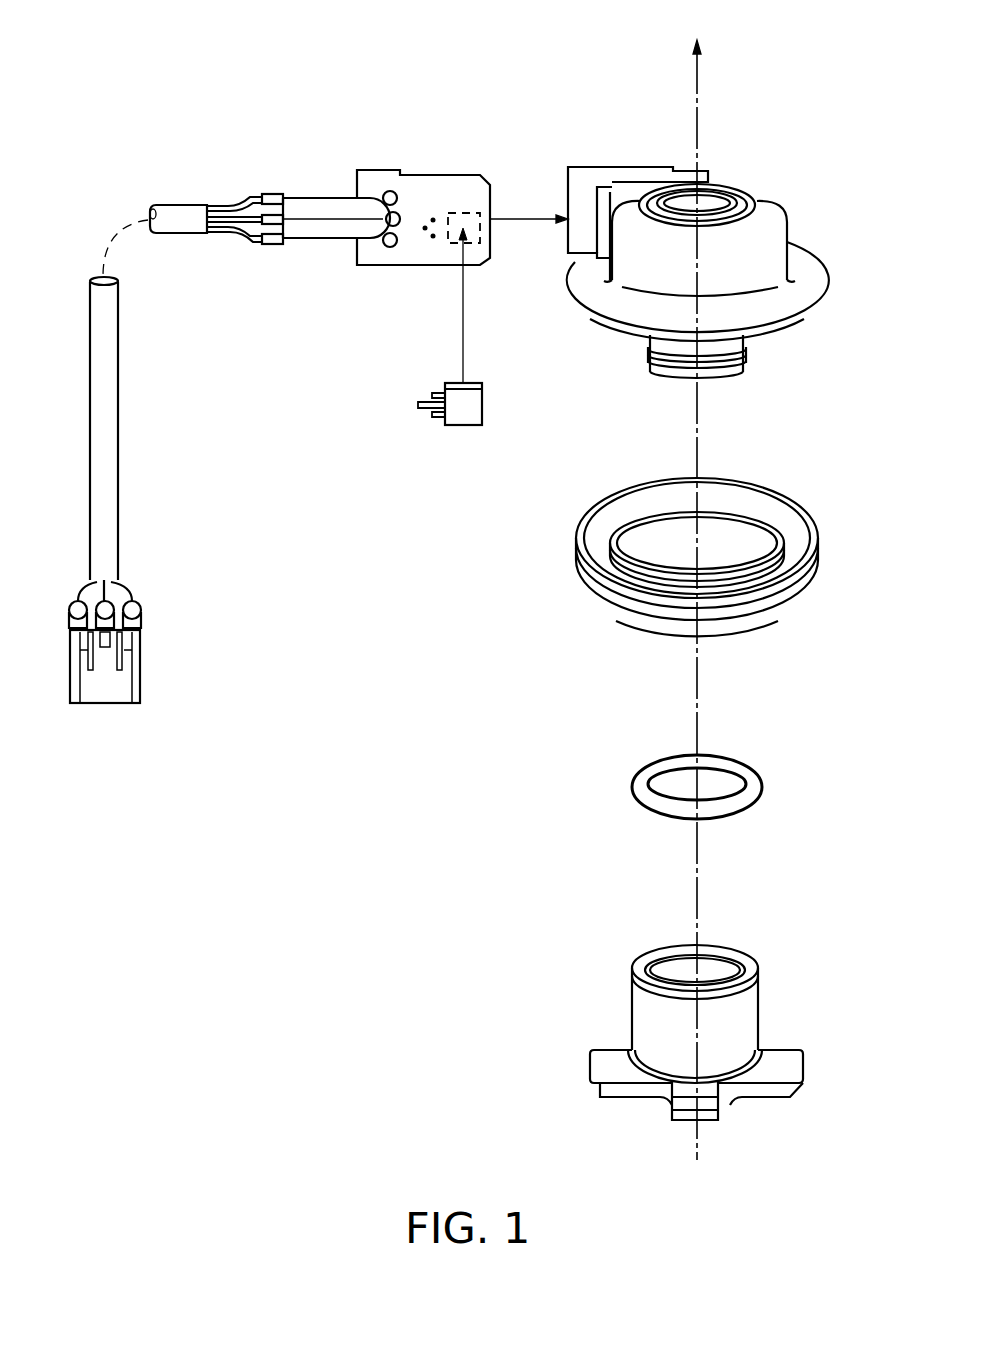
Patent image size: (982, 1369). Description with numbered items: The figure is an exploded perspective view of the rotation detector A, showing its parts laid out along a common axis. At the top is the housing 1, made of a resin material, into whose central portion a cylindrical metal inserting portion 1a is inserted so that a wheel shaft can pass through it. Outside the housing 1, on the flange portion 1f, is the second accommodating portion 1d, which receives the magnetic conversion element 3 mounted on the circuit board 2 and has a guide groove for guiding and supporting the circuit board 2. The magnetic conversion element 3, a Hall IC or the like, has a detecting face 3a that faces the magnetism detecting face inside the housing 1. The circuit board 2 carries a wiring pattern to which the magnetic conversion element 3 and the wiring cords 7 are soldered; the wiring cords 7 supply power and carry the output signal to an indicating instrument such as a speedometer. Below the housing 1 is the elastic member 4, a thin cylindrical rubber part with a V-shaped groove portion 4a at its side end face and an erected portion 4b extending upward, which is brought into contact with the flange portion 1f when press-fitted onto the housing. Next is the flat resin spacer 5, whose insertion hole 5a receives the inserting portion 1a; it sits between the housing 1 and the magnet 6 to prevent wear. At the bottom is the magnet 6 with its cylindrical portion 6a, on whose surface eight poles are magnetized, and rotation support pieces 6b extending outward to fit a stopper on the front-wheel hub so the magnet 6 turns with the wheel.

The rotation detector A is at (778, 51).
The housing 1 is at (724, 247).
The inserting portion 1a is at (742, 200).
The second accommodating portion 1d is at (583, 175).
The flange portion 1f is at (817, 280).
The circuit board 2 is at (450, 192).
The magnetic conversion element 3 is at (471, 410).
The detecting face 3a is at (462, 410).
The elastic member 4 is at (720, 541).
The groove portion 4a is at (793, 595).
The erected portion 4b is at (768, 508).
The spacer 5 is at (710, 761).
The insertion hole 5a is at (712, 768).
The magnet 6 is at (726, 1034).
The cylindrical portion 6a is at (748, 1025).
The rotation support pieces 6b is at (790, 1073).
The wiring cords 7 is at (173, 225).